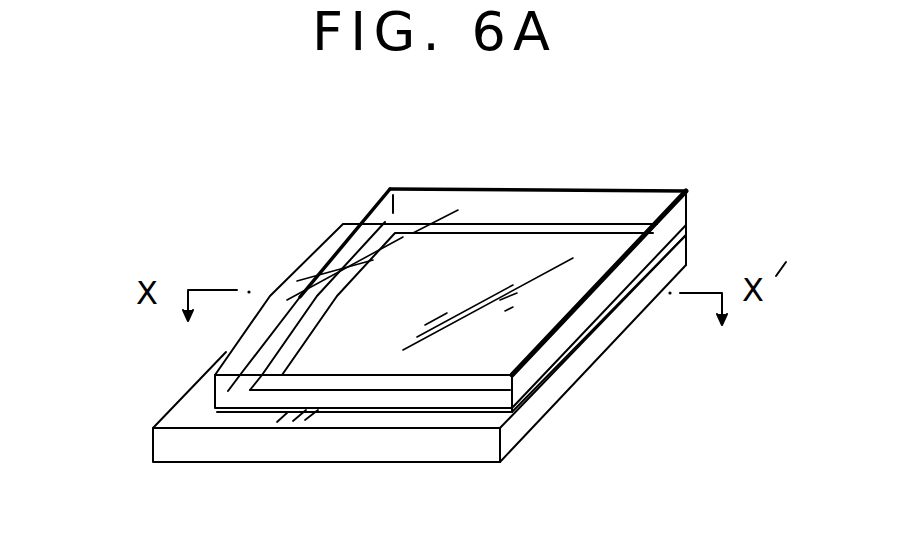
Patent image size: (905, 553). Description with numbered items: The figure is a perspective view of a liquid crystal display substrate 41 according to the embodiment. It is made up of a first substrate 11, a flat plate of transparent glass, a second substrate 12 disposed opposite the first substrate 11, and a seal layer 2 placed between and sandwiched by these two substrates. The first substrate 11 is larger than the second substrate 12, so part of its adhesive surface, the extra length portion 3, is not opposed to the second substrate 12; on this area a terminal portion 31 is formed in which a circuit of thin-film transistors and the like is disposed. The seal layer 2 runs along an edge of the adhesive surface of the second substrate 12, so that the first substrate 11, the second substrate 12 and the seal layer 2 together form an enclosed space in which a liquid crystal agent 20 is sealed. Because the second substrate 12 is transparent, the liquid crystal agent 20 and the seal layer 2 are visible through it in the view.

The liquid crystal display substrate 41 is at (569, 150).
The first substrate 11 is at (412, 463).
The seal layer 2 is at (501, 413).
The extra length portion 3 is at (240, 417).
The second substrate 12 is at (638, 190).
The terminal portion 31 is at (301, 297).
The liquid crystal agent 20 is at (495, 248).